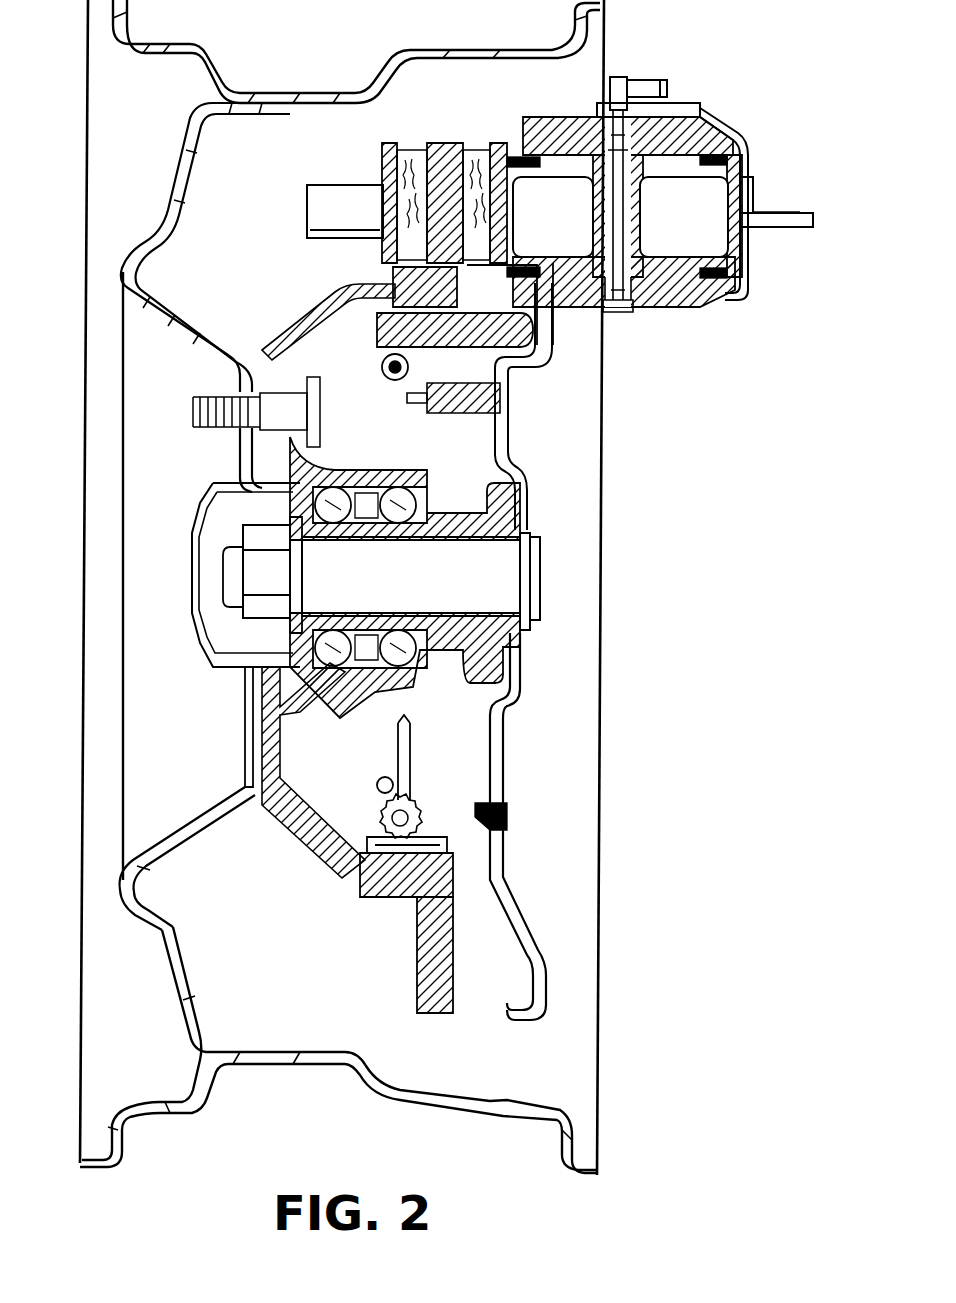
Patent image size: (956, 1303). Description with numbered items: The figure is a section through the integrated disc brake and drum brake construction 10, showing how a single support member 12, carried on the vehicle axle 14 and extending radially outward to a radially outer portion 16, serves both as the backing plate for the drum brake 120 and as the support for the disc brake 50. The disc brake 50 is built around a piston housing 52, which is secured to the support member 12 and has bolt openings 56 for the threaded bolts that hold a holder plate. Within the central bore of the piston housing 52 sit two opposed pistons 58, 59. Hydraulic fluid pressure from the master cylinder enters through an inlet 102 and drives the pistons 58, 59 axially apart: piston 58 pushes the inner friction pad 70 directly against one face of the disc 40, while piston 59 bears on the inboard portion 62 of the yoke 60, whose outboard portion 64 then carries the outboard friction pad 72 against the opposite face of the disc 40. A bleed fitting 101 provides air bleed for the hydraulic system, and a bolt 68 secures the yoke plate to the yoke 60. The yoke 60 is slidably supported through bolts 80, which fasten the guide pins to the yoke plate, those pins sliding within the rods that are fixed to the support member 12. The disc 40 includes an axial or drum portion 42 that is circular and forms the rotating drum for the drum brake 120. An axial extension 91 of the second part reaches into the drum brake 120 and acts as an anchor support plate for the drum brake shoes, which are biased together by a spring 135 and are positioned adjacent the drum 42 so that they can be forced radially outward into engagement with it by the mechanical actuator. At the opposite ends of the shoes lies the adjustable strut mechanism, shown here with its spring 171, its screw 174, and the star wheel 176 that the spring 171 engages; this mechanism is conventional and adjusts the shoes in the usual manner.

The integrated disc brake and drum brake construction 10 is at (622, 428).
The support member 12 is at (508, 453).
The vehicle axle 14 is at (543, 592).
The radially outer portion 16 is at (548, 338).
The disc 40 is at (443, 143).
The axial or drum portion 42 is at (318, 300).
The disc brake 50 is at (675, 210).
The piston housing 52 is at (680, 300).
The openings 56 is at (600, 140).
The piston 58 is at (553, 217).
The piston 59 is at (684, 217).
The yoke 60 is at (790, 212).
The inboard portion 62 is at (755, 227).
The outboard portion 64 is at (307, 215).
The bolt 68 is at (670, 92).
The inner friction or disc brake pad 70 is at (478, 146).
The outboard friction or brake pad 72 is at (398, 146).
The bolt 80 is at (753, 190).
The axial extension 91 is at (377, 330).
The bleed fitting 101 is at (618, 77).
The inlet 102 is at (620, 310).
The drum brake 120 is at (628, 662).
The spring 135 is at (390, 382).
The spring 171 is at (378, 778).
The screw 174 is at (418, 800).
The star wheel 176 is at (375, 822).